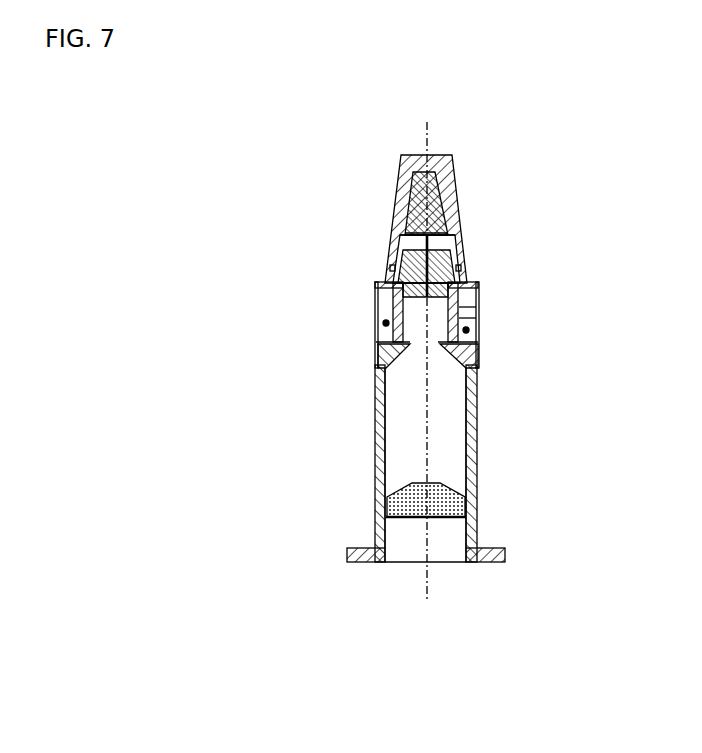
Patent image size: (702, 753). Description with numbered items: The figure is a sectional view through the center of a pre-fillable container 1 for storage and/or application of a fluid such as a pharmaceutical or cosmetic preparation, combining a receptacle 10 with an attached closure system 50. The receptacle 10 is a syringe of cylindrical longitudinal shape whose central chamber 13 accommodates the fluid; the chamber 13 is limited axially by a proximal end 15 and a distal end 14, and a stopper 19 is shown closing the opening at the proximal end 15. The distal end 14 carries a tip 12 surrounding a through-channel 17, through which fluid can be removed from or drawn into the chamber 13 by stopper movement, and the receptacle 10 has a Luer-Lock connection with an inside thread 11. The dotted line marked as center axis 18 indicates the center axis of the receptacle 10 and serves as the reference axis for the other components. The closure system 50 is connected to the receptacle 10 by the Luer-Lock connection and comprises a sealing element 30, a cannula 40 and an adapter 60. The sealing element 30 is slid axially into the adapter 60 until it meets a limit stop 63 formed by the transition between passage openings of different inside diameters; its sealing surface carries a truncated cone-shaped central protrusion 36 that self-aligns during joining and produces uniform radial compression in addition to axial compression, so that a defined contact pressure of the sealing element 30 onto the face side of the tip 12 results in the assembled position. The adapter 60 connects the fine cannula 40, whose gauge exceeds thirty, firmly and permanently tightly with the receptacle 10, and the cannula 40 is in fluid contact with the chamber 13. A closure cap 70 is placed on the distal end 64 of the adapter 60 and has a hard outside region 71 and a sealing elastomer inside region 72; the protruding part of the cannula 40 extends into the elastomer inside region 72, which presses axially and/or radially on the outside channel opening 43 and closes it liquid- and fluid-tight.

The pre-fillable container 1 is at (409, 104).
The receptacle 10 is at (376, 430).
The inside thread 11 is at (479, 312).
The tip 12 is at (378, 339).
The central chamber 13 is at (468, 467).
The distal end 14 is at (362, 373).
The proximal end 15 is at (316, 586).
The through-channel 17 is at (478, 349).
The center axis 18 is at (440, 597).
The stopper 19 is at (468, 512).
The sealing element 30 is at (470, 262).
The central protrusion 36 is at (392, 314).
The cannula 40 is at (463, 220).
The outside channel opening 43 is at (460, 221).
The closure system 50 is at (450, 134).
The adapter 60 is at (392, 320).
The limit stop 63 is at (386, 280).
The distal end of adapter 64 is at (468, 250).
The closure cap 70 is at (395, 192).
The hard outside region 71 is at (392, 225).
The elastomer inside region 72 is at (452, 172).